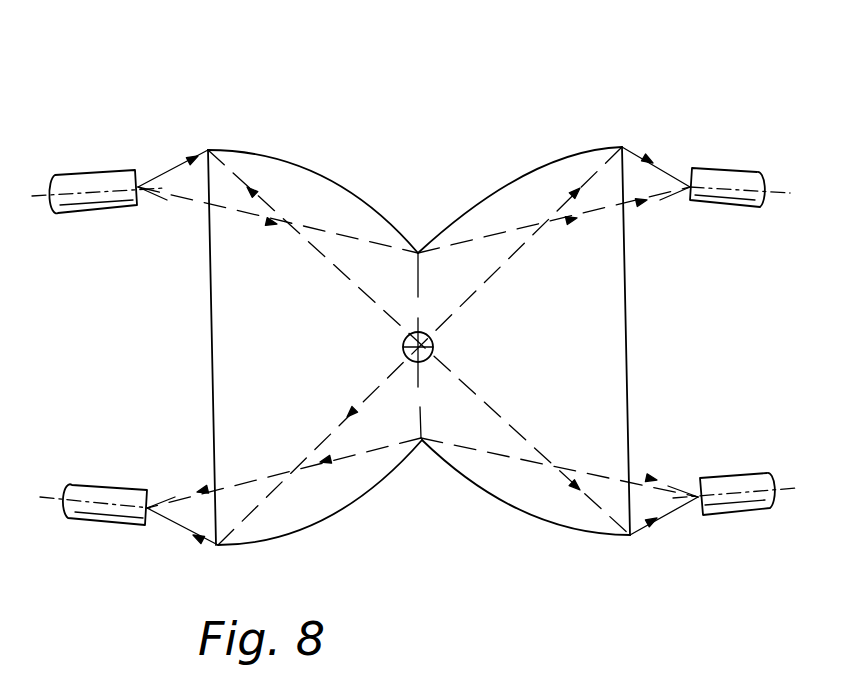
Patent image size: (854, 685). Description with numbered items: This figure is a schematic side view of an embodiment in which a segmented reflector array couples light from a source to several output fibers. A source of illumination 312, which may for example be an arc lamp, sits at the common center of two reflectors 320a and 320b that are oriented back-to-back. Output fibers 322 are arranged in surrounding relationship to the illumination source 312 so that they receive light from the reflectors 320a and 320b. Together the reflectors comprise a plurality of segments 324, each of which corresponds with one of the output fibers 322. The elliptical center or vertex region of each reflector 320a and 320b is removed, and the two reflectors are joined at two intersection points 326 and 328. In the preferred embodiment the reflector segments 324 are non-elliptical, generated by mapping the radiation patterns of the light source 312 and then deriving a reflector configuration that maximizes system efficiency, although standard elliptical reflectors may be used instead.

The source of illumination 312 is at (432, 345).
The reflector 320a is at (329, 173).
The reflector 320b is at (574, 144).
The output fibers 322 is at (98, 210).
The segments 324 is at (247, 150).
The intersection point 326 is at (418, 253).
The intersection point 328 is at (422, 447).